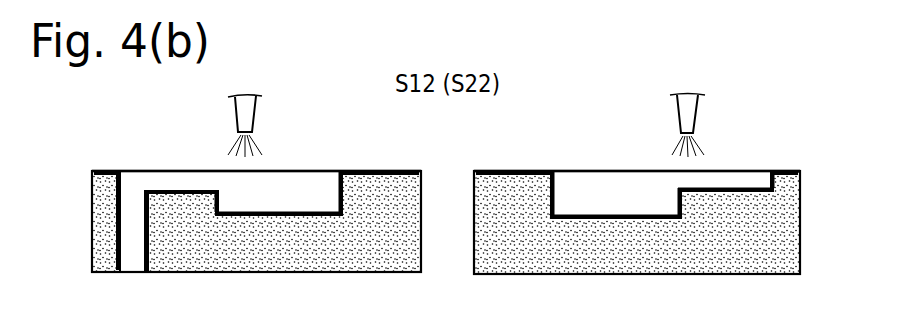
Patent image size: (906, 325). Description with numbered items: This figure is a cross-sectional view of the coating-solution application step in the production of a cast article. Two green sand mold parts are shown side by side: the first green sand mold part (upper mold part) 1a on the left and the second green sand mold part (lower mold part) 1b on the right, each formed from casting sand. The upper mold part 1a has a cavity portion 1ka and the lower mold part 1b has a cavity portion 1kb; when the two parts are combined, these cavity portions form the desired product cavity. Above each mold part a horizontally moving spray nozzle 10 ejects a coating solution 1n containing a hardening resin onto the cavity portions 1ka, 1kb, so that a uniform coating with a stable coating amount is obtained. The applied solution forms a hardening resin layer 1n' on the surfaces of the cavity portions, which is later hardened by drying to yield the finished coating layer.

The spray nozzle 10 is at (245, 110).
The coating solution 1n is at (442, 143).
The hardening resin layer 1n' is at (446, 142).
The cavity portion 1ka is at (302, 190).
The cavity portion 1kb is at (578, 190).
The first green sand mold part 1a is at (277, 248).
The second green sand mold part 1b is at (647, 250).